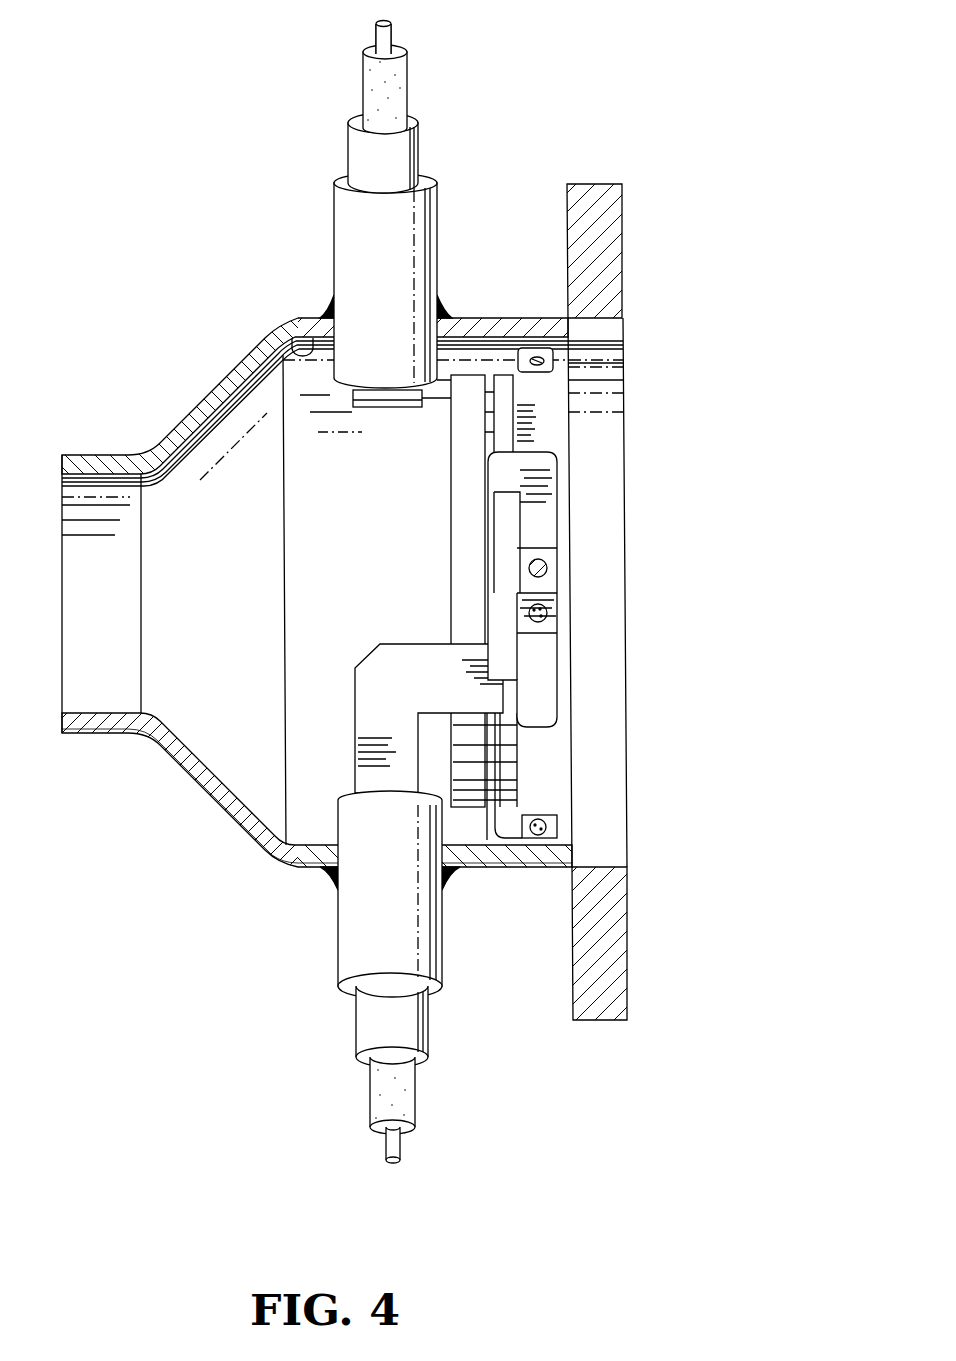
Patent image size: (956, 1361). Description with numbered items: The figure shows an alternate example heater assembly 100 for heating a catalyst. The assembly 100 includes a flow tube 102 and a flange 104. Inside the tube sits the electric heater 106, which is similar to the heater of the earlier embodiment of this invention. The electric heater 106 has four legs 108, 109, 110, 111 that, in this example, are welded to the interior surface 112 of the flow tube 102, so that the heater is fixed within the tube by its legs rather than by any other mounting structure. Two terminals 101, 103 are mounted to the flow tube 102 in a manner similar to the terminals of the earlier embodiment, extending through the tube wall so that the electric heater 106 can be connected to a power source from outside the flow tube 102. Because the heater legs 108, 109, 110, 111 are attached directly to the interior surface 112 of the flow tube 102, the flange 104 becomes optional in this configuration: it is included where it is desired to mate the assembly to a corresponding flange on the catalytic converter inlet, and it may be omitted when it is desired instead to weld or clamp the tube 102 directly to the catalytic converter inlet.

The heater assembly 100 is at (342, 547).
The terminal 101 is at (441, 250).
The flow tube 102 is at (193, 398).
The terminal 103 is at (338, 925).
The flange 104 is at (608, 225).
The electric heater 106 is at (428, 537).
The leg 108 is at (540, 362).
The leg 109 is at (540, 520).
The leg 110 is at (547, 647).
The leg 111 is at (553, 826).
The interior surface 112 is at (292, 343).